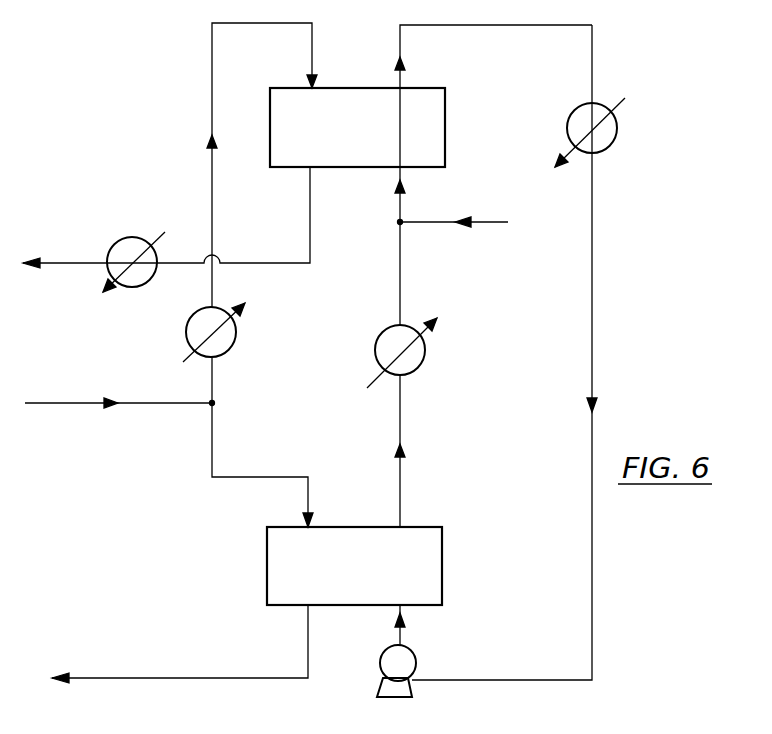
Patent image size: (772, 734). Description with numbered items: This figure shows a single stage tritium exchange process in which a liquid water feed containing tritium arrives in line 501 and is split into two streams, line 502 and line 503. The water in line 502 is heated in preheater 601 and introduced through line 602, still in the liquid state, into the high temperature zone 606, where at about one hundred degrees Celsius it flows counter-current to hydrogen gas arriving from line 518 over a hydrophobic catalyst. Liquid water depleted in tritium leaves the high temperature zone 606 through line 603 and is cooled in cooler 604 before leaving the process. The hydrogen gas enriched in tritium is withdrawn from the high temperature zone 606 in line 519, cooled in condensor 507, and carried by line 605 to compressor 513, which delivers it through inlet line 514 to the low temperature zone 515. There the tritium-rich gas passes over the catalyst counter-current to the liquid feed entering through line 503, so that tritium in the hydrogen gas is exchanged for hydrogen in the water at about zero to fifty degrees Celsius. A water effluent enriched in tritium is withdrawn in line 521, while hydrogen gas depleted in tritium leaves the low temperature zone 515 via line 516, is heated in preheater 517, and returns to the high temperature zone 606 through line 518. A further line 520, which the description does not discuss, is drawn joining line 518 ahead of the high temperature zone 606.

The liquid water feed line 501 is at (67, 402).
The line 502 is at (215, 387).
The line 503 is at (208, 453).
The condensor 507 is at (617, 130).
The compressor 513 is at (413, 668).
The inlet line 514 is at (401, 638).
The low temperature zone 515 is at (267, 577).
The line 516 is at (400, 417).
The preheater 517 is at (425, 355).
The line 518 is at (402, 260).
The line 519 is at (582, 25).
The makeup inlet line 520 is at (486, 221).
The line 521 is at (218, 677).
The preheater 601 is at (235, 333).
The line 602 is at (208, 203).
The line 603 is at (308, 233).
The cooler 604 is at (118, 238).
The line 605 is at (596, 250).
The high temperature zone 606 is at (270, 107).